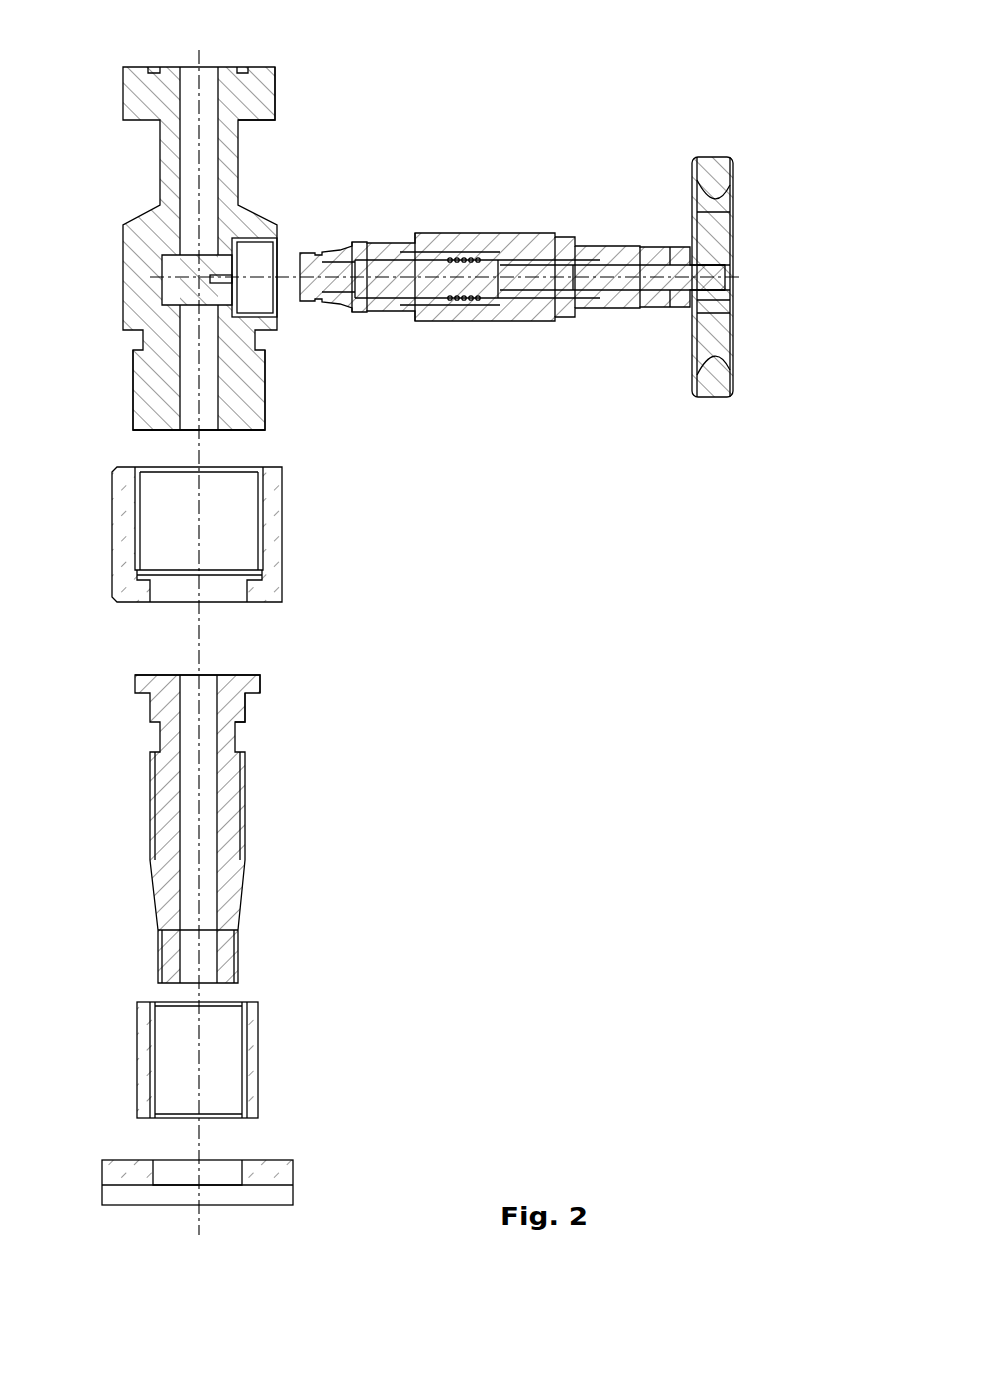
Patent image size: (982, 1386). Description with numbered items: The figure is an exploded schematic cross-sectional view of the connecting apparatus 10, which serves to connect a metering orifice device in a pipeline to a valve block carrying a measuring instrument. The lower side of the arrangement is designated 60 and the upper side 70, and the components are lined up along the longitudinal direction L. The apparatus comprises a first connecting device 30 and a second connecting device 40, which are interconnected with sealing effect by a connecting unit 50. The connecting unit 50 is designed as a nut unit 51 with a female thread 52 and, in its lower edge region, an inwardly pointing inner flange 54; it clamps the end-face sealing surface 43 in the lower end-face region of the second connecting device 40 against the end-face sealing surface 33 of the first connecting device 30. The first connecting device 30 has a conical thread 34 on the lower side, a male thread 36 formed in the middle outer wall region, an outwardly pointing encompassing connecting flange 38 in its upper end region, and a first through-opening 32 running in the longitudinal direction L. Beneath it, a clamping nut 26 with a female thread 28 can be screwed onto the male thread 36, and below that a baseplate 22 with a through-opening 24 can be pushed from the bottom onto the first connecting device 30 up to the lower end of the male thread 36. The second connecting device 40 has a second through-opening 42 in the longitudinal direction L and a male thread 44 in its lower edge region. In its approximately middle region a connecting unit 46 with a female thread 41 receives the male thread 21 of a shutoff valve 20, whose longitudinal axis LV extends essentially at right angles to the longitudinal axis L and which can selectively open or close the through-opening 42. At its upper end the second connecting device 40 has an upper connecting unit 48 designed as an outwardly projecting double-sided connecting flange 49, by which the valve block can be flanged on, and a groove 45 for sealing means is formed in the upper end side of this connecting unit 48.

The connecting apparatus 10 is at (632, 840).
The shutoff valve 20 is at (515, 268).
The male thread 21 is at (405, 328).
The longitudinal axis of the shutoff valve LV is at (603, 282).
The baseplate 22 is at (228, 1181).
The through-opening 24 is at (240, 1173).
The clamping nut 26 is at (246, 1060).
The female thread 28 is at (248, 1030).
The first connecting device 30 is at (283, 813).
The first through-opening 32 is at (216, 890).
The end-face sealing surface 33 is at (240, 670).
The conical thread 34 is at (248, 958).
The male thread 36 is at (246, 800).
The connecting flange 38 is at (258, 680).
The second connecting device 40 is at (271, 239).
The female thread 41 is at (268, 298).
The second through-opening 42 is at (216, 180).
The end-face sealing surface 43 is at (243, 432).
The male thread 44 is at (270, 387).
The groove 45 is at (242, 70).
The connecting unit 46 is at (254, 270).
The upper connecting unit 48 is at (288, 70).
The connecting flange 49 is at (266, 98).
The connecting unit 50 is at (277, 542).
The nut unit 51 is at (278, 540).
The female thread 52 is at (262, 500).
The inner flange 54 is at (262, 590).
The lower side 60 is at (350, 1269).
The upper side 70 is at (438, 84).
The longitudinal direction L is at (196, 640).